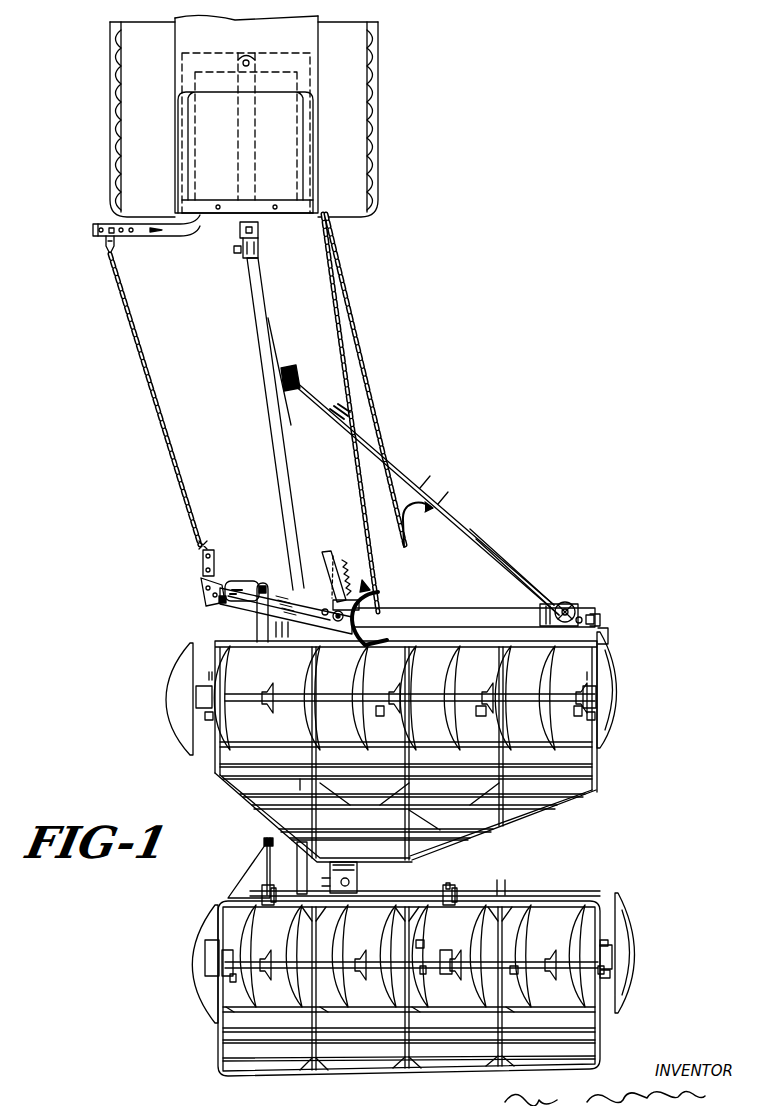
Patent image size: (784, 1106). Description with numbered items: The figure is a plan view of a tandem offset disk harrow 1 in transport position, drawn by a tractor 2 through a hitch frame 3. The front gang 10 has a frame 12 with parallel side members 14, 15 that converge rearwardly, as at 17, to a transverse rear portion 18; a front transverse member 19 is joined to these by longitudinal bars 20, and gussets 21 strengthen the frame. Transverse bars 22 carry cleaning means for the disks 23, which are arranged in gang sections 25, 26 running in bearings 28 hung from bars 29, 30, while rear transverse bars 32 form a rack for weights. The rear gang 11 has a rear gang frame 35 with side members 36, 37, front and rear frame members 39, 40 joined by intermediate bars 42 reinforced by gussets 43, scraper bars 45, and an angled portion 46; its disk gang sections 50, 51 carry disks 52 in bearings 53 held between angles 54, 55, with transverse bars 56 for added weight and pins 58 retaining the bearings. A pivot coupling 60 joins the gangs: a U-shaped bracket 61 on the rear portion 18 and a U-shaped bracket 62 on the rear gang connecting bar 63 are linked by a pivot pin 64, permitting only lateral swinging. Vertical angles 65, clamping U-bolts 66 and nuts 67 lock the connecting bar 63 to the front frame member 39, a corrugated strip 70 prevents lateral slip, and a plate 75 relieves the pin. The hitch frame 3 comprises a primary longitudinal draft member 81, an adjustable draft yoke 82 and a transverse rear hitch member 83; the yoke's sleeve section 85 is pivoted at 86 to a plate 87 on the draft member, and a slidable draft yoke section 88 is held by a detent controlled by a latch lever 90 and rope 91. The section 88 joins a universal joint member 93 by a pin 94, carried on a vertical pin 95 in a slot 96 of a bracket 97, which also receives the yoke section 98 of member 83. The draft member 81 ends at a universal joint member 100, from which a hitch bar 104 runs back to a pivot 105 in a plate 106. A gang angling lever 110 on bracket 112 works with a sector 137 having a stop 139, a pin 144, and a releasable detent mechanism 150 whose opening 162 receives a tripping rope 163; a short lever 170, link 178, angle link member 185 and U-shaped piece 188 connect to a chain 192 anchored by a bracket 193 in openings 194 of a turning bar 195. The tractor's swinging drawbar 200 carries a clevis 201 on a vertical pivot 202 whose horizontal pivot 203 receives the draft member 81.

The harrow 1 is at (668, 804).
The tractor 2 is at (383, 170).
The hitch frame 3 is at (428, 430).
The front gang 10 is at (620, 711).
The rear gang 11 is at (652, 922).
The frame 12 is at (591, 798).
The side member 14 is at (597, 771).
The side member 15 is at (217, 757).
The converging portion 17 is at (250, 798).
The transverse rear portion 18 is at (460, 880).
The transverse member 19 is at (452, 646).
The longitudinal bars 20 is at (312, 787).
The reenforcing gussets 21 is at (242, 656).
The transverse bars 22 is at (255, 752).
The disks 23 is at (182, 672).
The gang section 25 is at (170, 692).
The gang section 26 is at (606, 684).
The bearings 28 is at (200, 700).
The bars 29 is at (390, 668).
The bars 30 is at (212, 722).
The transverse bars 32 is at (384, 805).
The rear gang frame 35 is at (600, 1044).
The side member 36 is at (598, 1012).
The side member 37 is at (222, 1028).
The front frame member 39 is at (535, 894).
The rear frame member 40 is at (520, 1070).
The intermediate bars 42 is at (390, 988).
The gussets 43 is at (304, 1086).
The scraper bars 45 is at (250, 1006).
The angled frame member 46 is at (520, 818).
The disk gang section 50 is at (196, 978).
The disk gang section 51 is at (630, 920).
The disks 52 is at (292, 944).
The bearings 53 is at (232, 942).
The angles 54 is at (516, 925).
The angles 55 is at (517, 987).
The transverse bars 56 is at (360, 1030).
The pins 58 is at (480, 716).
The pivot coupling 60 is at (340, 862).
The U-shaped bracket 61 is at (352, 866).
The U-shaped bracket 62 is at (330, 880).
The rear gang connecting bar 63 is at (432, 893).
The pivot pin 64 is at (350, 882).
The vertical angles 65 is at (380, 895).
The clamping U-bolt 66 is at (272, 903).
The nuts 67 is at (456, 891).
The corrugated strip 70 is at (378, 917).
The plate 75 is at (248, 876).
The primary longitudinal draft member 81 is at (283, 480).
The adjustable draft yoke 82 is at (443, 491).
The transverse rear hitch member 83 is at (421, 614).
The sleeve section 85 is at (397, 458).
The pivot connection 86 is at (295, 372).
The plate 87 is at (278, 347).
The draft yoke section 88 is at (483, 542).
The latch lever 90 is at (428, 527).
The rope 91 is at (366, 386).
The universal joint member 93 is at (566, 602).
The pin 94 is at (582, 615).
The vertical pin 95 is at (610, 606).
The slot 96 is at (601, 619).
The bracket 97 is at (609, 640).
The yoke section 98 is at (545, 608).
The universal joint member 100 is at (296, 594).
The hitch bar 104 is at (300, 787).
The pivot 105 is at (297, 872).
The plate 106 is at (350, 926).
The gang angling lever 110 is at (238, 566).
The bracket 112 is at (255, 646).
The sector 137 is at (334, 560).
The stop 139 is at (330, 549).
The pin 144 is at (345, 590).
The releasable detent mechanism 150 is at (370, 597).
The opening 162 is at (350, 640).
The tripping rope 163 is at (345, 349).
The short lever 170 is at (214, 601).
The link 178 is at (222, 620).
The angle link member 185 is at (204, 590).
The U-shaped piece 188 is at (204, 566).
The chain 192 is at (160, 418).
The bracket 193 is at (107, 247).
The openings 194 is at (103, 226).
The turning bar 195 is at (162, 238).
The swinging drawbar 200 is at (250, 193).
The clevis 201 is at (274, 249).
The vertical pivot 202 is at (260, 230).
The horizontal pivot 203 is at (238, 253).